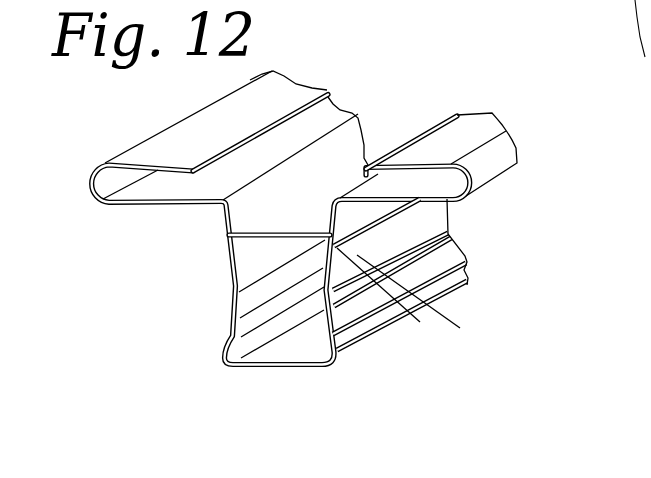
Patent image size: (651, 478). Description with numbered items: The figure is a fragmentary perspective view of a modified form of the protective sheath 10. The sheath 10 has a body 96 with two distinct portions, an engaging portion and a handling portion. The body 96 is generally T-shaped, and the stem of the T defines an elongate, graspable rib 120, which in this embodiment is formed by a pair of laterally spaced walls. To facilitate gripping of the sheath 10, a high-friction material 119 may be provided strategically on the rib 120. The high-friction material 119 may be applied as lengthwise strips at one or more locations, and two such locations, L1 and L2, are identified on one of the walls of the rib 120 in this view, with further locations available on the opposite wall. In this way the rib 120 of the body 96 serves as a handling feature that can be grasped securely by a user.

The protective sheath 10 is at (204, 287).
The rib 120 is at (270, 376).
The body 96 is at (288, 370).
The high-friction material 119 is at (388, 214).
The location L1 is at (420, 322).
The location L2 is at (460, 328).